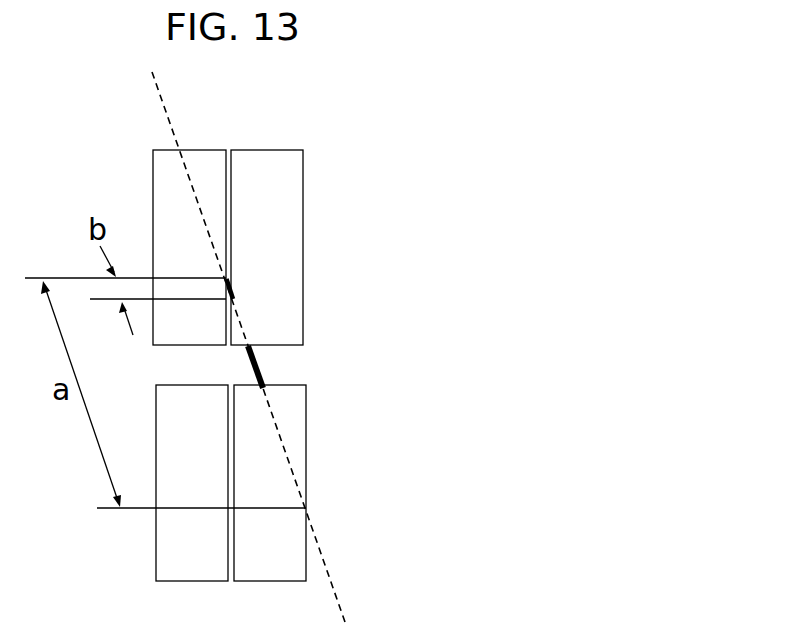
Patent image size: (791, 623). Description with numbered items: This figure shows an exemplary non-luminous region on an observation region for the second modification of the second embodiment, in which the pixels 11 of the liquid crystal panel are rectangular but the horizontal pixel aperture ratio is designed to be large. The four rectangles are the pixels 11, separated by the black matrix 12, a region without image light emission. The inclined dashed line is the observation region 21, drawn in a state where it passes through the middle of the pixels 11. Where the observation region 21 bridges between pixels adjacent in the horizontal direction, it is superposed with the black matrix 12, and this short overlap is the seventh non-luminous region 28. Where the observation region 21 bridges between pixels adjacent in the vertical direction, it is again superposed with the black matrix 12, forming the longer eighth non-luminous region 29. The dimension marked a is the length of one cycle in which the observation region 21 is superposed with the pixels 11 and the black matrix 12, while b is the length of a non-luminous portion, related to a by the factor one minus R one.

The pixels 11 is at (297, 225).
The black matrix 12 is at (300, 372).
The observation region 21 is at (330, 577).
The seventh non-luminous region 28 is at (232, 288).
The eighth non-luminous region 29 is at (263, 388).